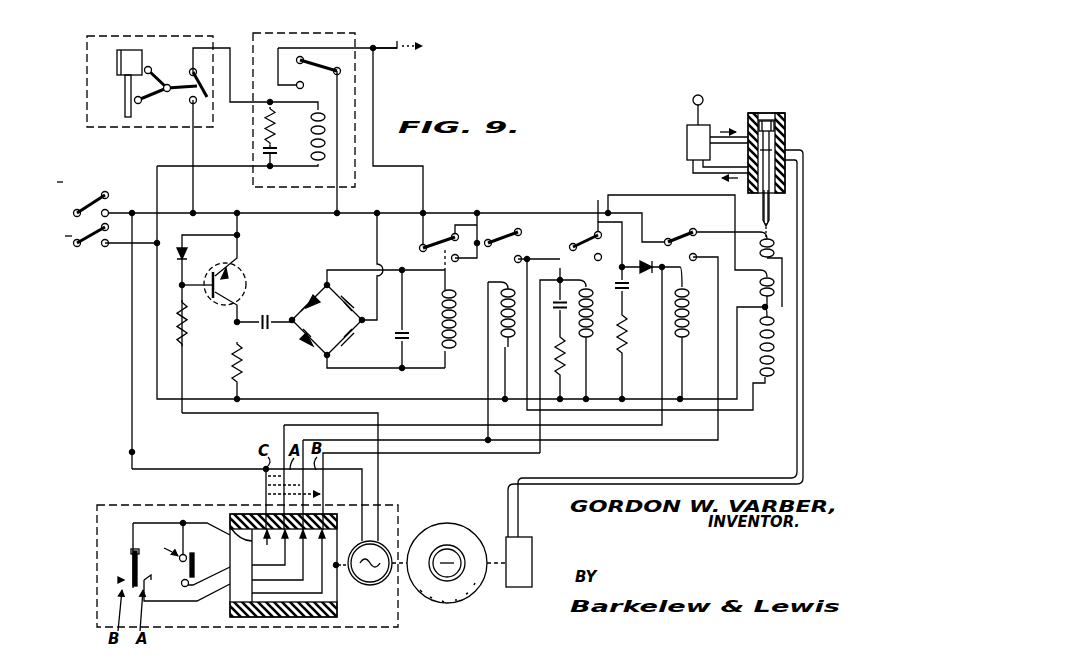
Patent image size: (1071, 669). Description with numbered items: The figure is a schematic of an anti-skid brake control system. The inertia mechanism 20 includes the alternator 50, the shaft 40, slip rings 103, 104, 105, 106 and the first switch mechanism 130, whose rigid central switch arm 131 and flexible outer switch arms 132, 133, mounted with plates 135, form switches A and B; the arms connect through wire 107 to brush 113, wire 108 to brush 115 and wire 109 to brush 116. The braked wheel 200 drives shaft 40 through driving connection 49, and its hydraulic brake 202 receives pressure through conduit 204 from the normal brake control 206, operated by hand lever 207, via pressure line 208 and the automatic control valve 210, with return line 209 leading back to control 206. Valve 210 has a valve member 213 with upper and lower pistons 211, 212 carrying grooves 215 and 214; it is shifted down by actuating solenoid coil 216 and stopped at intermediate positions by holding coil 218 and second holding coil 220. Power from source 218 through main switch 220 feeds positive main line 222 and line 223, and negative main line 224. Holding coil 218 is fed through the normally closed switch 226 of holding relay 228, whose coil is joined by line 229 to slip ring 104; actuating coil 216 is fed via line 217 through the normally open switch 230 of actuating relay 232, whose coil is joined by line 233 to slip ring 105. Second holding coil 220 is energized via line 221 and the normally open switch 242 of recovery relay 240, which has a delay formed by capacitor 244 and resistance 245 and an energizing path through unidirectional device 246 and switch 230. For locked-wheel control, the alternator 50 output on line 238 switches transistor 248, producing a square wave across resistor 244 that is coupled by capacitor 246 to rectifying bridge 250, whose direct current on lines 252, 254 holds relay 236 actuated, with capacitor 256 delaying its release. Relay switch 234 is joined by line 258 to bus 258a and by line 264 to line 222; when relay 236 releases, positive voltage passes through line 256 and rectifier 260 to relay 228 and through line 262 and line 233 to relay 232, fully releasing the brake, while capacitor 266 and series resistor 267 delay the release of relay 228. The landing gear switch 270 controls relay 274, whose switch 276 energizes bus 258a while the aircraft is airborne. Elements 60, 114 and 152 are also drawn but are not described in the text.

The mechanism 20 is at (119, 507).
The shaft 40 is at (336, 567).
The driving connection 49 is at (420, 568).
The alternator 50 is at (376, 586).
The stator connection 60 is at (346, 540).
The slip ring 103 is at (265, 618).
The slip ring 104 is at (282, 618).
The slip ring 105 is at (305, 617).
The slip ring 106 is at (322, 617).
The wire 107 is at (167, 523).
The wire 108 is at (182, 604).
The wire 109 is at (212, 603).
The brush 113 is at (238, 514).
The winding connections 114 is at (288, 561).
The brush 115 is at (328, 513).
The brush 116 is at (336, 536).
The first switch mechanism 130 is at (146, 534).
The central switch arm 131 is at (130, 566).
The outer switch arm 132 is at (150, 578).
The outer switch arm 133 is at (118, 583).
The plates 135 is at (120, 554).
The contact bar 152 is at (196, 577).
The braked wheel 200 is at (470, 600).
The brake 202 is at (506, 546).
The conduit 204 is at (581, 480).
The normal brake control 206 is at (687, 138).
The hand lever 207 is at (692, 101).
The pressure line 208 is at (716, 133).
The low pressure return line 209 is at (692, 172).
The automatic control valve 210 is at (789, 138).
The upper piston 211 is at (787, 125).
The lower piston 212 is at (800, 156).
The valve member 213 is at (758, 206).
The groove 214 is at (757, 158).
The groove 215 is at (768, 121).
The actuating solenoid coil 216 is at (776, 346).
The line 217 is at (583, 411).
The holding coil 218 is at (775, 254).
The second holding coil 220 is at (92, 256).
The line 221 is at (656, 200).
The main line 222 is at (147, 212).
The line 223 is at (135, 453).
The main line 224 is at (172, 166).
The normally closed switch 226 is at (510, 331).
The holding relay 228 is at (692, 350).
The line 229 is at (632, 426).
The normally open switch 230 is at (557, 228).
The actuating relay 232 is at (506, 282).
The line 233 is at (480, 413).
The switch 234 is at (448, 212).
The relay 236 is at (454, 330).
The line 238 is at (263, 414).
The recovery relay 240 is at (586, 332).
The normally open switch 242 is at (598, 222).
The capacitor 244 is at (247, 376).
The resistance 245 is at (566, 362).
The unidirectional device 246 is at (265, 336).
The transistor 248 is at (249, 278).
The rectifying bridge 250 is at (295, 280).
The line 252 is at (336, 275).
The line 254 is at (366, 370).
The capacitor 256 is at (430, 320).
The line 258 is at (430, 182).
The bus 258a is at (397, 44).
The unidirectional conductive device 260 is at (655, 258).
The line 262 is at (716, 313).
The line 264 is at (523, 201).
The capacitor 266 is at (637, 288).
The series resistor 267 is at (625, 359).
The landing gear switch 270 is at (168, 36).
The relay 274 is at (314, 150).
The switch 276 is at (327, 60).